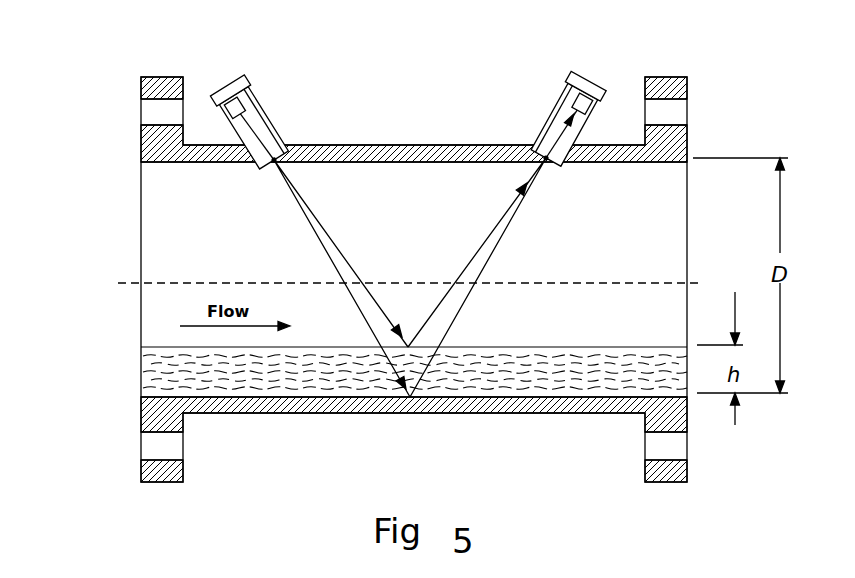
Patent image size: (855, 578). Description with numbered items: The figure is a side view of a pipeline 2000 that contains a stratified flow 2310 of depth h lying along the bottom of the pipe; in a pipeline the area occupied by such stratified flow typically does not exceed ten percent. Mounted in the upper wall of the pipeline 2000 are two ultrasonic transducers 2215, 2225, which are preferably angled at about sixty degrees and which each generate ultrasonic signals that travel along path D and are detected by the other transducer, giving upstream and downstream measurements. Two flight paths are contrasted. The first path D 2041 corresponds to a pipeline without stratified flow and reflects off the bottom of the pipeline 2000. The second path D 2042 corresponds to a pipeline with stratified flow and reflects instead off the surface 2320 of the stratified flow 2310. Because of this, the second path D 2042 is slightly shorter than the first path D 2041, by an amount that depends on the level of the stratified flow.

The pipeline 2000 is at (596, 327).
The ultrasonic transducer 2215 is at (263, 103).
The ultrasonic transducer 2225 is at (557, 95).
The second path D 2042 is at (348, 258).
The first path D 2041 is at (512, 222).
The surface of stratified flow 2320 is at (165, 347).
The stratified flow 2310 is at (515, 377).